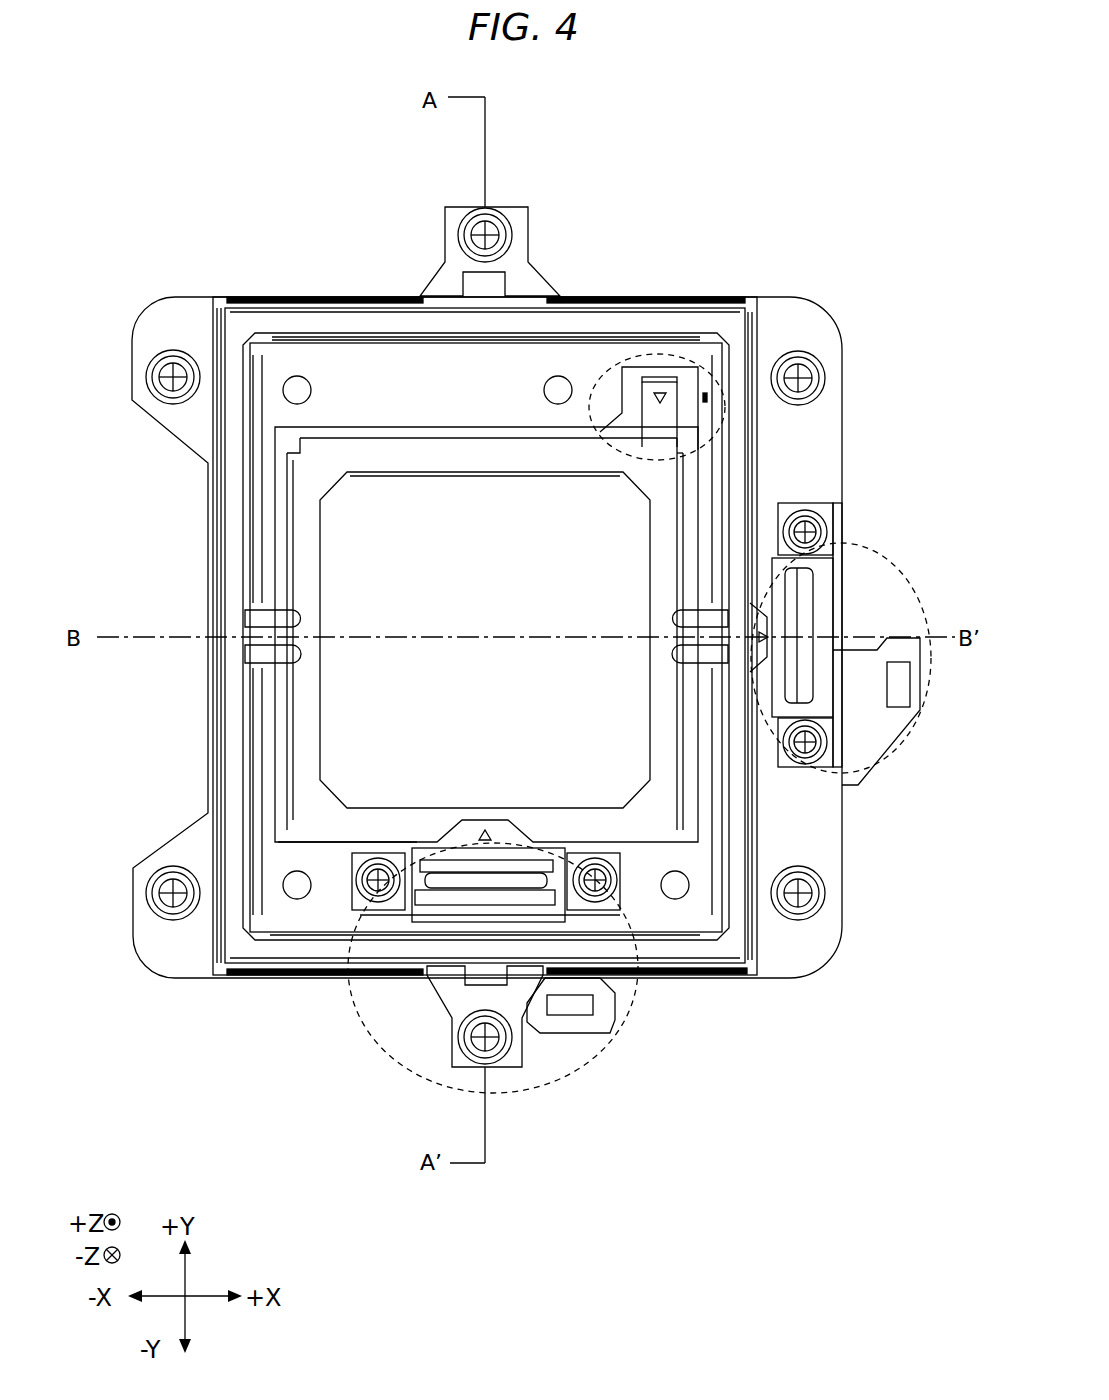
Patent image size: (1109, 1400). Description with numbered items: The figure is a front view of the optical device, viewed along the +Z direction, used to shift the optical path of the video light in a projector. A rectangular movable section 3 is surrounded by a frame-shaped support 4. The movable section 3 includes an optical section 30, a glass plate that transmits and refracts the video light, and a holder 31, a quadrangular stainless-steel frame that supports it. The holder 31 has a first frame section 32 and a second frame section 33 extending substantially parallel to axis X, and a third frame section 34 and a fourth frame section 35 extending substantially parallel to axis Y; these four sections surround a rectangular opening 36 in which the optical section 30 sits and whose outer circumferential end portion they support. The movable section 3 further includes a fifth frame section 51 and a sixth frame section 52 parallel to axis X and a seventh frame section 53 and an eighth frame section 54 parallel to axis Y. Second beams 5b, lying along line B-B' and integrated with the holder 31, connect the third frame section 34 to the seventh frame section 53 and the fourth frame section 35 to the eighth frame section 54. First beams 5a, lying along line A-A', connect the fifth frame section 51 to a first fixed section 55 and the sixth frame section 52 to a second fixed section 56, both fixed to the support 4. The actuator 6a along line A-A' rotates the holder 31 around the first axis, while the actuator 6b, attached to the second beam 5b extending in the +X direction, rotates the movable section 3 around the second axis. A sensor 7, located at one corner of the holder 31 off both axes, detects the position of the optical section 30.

The movable section 3 is at (369, 640).
The support 4 is at (160, 322).
The first beams 5a is at (505, 283).
The second beams 5b is at (263, 633).
The actuator 6a is at (610, 1047).
The actuator 6b is at (892, 563).
The sensor 7 is at (683, 358).
The optical section 30 is at (348, 583).
The holder 31 is at (305, 532).
The first frame section 32 is at (342, 813).
The second frame section 33 is at (363, 462).
The third frame section 34 is at (665, 765).
The fourth frame section 35 is at (305, 757).
The opening 36 is at (402, 478).
The fifth frame section 51 is at (697, 957).
The sixth frame section 52 is at (648, 318).
The seventh frame section 53 is at (742, 830).
The eighth frame section 54 is at (232, 708).
The first fixed section 55 is at (457, 1067).
The second fixed section 56 is at (528, 222).